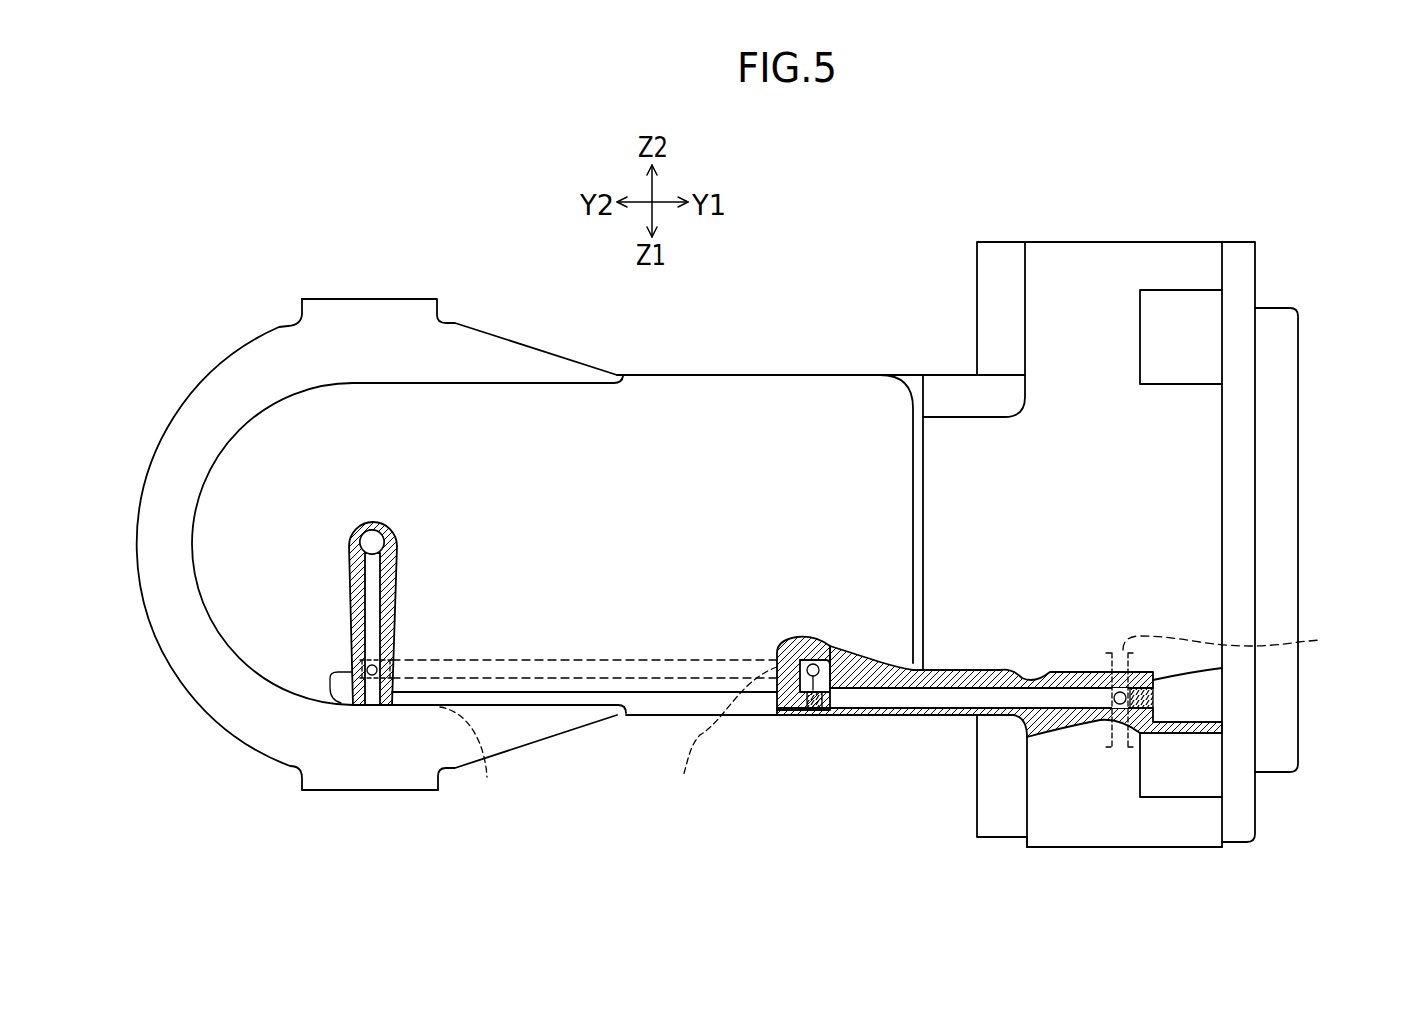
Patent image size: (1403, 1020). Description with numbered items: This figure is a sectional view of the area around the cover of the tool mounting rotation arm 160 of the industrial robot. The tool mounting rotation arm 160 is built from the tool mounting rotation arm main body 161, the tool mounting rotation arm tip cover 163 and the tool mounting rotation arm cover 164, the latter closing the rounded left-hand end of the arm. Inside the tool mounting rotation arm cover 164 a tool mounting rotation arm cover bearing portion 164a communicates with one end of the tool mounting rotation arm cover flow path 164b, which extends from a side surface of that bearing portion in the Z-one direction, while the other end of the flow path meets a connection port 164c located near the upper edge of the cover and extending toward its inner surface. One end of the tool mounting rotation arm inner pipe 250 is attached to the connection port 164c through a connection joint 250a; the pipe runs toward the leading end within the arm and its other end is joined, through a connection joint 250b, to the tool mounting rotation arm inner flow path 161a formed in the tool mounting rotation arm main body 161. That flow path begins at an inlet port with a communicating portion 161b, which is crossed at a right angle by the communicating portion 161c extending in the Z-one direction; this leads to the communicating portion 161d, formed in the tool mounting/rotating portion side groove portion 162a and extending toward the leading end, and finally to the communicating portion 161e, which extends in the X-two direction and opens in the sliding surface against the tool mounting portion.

The tool mounting rotation arm 160 is at (773, 360).
The tool mounting rotation arm main body 161 is at (290, 343).
The tool mounting rotation arm inner flow path 161a is at (893, 716).
The communicating portion 161b is at (787, 720).
The communicating portion 161c is at (830, 720).
The communicating portion 161d is at (937, 700).
The communicating portion 161e is at (1120, 704).
The tool mounting/rotating portion side groove portion 162a is at (1254, 642).
The tool mounting rotation arm tip cover 163 is at (1283, 400).
The tool mounting rotation arm cover 164 is at (310, 435).
The tool mounting rotation arm cover bearing portion 164a is at (358, 522).
The tool mounting rotation arm cover flow path 164b is at (358, 590).
The connection port 164c is at (350, 690).
The tool mounting rotation arm inner pipe 250 is at (573, 679).
The connection joint 250a is at (483, 760).
The connection joint 250b is at (715, 741).